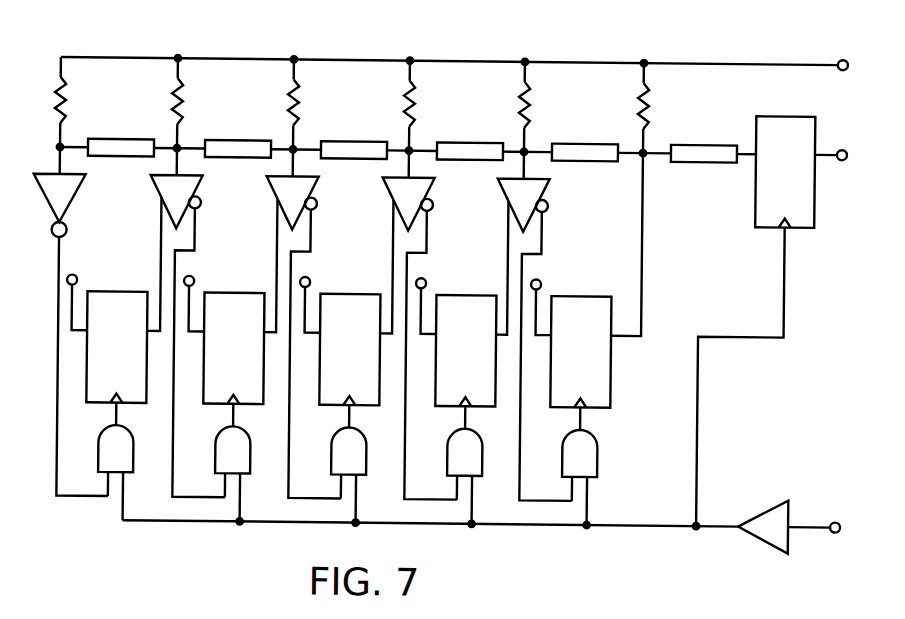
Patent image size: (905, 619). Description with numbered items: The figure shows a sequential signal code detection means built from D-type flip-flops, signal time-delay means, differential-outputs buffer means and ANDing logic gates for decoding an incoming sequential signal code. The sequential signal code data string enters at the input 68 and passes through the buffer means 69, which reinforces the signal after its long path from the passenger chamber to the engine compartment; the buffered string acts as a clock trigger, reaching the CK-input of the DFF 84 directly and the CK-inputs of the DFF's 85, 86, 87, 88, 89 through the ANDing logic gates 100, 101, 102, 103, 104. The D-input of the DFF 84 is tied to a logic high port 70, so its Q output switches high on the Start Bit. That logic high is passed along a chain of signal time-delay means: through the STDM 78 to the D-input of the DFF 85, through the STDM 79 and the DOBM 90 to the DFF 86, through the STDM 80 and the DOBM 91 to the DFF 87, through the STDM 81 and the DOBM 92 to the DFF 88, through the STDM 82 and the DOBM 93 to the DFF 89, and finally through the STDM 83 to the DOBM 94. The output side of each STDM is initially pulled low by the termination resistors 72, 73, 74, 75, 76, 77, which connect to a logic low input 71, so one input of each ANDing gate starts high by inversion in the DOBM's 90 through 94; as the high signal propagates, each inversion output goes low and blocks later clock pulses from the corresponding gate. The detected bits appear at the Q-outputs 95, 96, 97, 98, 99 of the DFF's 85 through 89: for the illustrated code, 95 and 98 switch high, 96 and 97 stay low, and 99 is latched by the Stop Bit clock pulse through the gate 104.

The input 68 is at (839, 524).
The buffer means 69 is at (766, 503).
The logic high port 70 is at (842, 142).
The logic low input 71 is at (842, 52).
The termination resistor 72 is at (647, 98).
The termination resistor 73 is at (528, 98).
The termination resistor 74 is at (413, 98).
The termination resistor 75 is at (297, 96).
The termination resistor 76 is at (181, 96).
The termination resistor 77 is at (64, 96).
The signal time-delay means 78 is at (706, 138).
The signal time-delay means 79 is at (587, 138).
The signal time-delay means 80 is at (472, 138).
The signal time-delay means 81 is at (356, 138).
The signal time-delay means 82 is at (240, 138).
The signal time-delay means 83 is at (123, 138).
The D-type flip-flop 84 is at (815, 212).
The D-type flip-flop 85 is at (604, 403).
The D-type flip-flop 86 is at (489, 403).
The D-type flip-flop 87 is at (373, 403).
The D-type flip-flop 88 is at (257, 403).
The D-type flip-flop 89 is at (140, 403).
The differential-outputs buffer means 90 is at (550, 194).
The differential-outputs buffer means 91 is at (435, 194).
The differential-outputs buffer means 92 is at (319, 192).
The differential-outputs buffer means 93 is at (203, 192).
The differential-outputs buffer means 94 is at (75, 198).
The Q-output of DFF 85 95 is at (542, 277).
The Q-output of DFF 86 96 is at (427, 277).
The Q-output of DFF 87 97 is at (311, 277).
The Q-output of DFF 88 98 is at (195, 277).
The Q-output of DFF 89 99 is at (78, 277).
The ANDing logic gate 100 is at (600, 456).
The ANDing logic gate 101 is at (486, 456).
The ANDing logic gate 102 is at (370, 456).
The ANDing logic gate 103 is at (254, 456).
The ANDing logic gate 104 is at (136, 456).